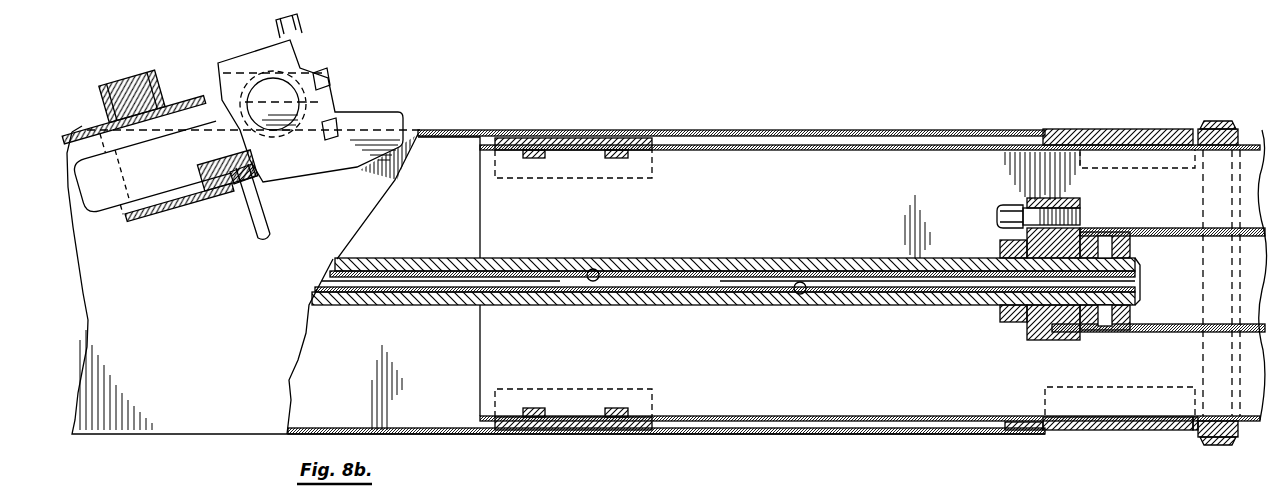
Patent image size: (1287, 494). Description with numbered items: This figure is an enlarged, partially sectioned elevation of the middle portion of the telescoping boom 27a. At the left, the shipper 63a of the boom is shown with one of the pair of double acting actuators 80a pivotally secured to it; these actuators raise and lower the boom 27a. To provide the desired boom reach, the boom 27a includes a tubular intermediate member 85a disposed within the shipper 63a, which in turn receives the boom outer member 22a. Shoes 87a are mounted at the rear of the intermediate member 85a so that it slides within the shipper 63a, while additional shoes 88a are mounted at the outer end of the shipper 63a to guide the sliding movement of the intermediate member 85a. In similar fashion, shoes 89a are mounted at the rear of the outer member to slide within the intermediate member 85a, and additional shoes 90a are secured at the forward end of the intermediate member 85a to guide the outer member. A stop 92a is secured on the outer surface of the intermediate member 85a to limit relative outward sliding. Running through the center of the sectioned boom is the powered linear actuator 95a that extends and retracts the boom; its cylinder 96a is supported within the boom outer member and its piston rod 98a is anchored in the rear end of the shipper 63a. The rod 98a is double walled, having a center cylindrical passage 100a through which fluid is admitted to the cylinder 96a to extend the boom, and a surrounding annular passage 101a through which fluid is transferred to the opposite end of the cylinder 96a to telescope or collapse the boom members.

The outer tube member 22a is at (1236, 312).
The boom 27a is at (768, 125).
The shipper 63a is at (153, 375).
The double acting actuators 80a is at (165, 205).
The tubular intermediate member 85a is at (862, 145).
The shoes 87a is at (617, 140).
The additional shoes 88a is at (1110, 132).
The shoes 89a is at (484, 493).
The additional shoes 90a is at (1052, 493).
The stop 92a is at (1005, 430).
The powered linear actuator 95a is at (1174, 218).
The cylinder 96a is at (1178, 334).
The piston rod 98a is at (730, 258).
The center cylindrical passage 100a is at (588, 280).
The annular passage 101a is at (800, 295).